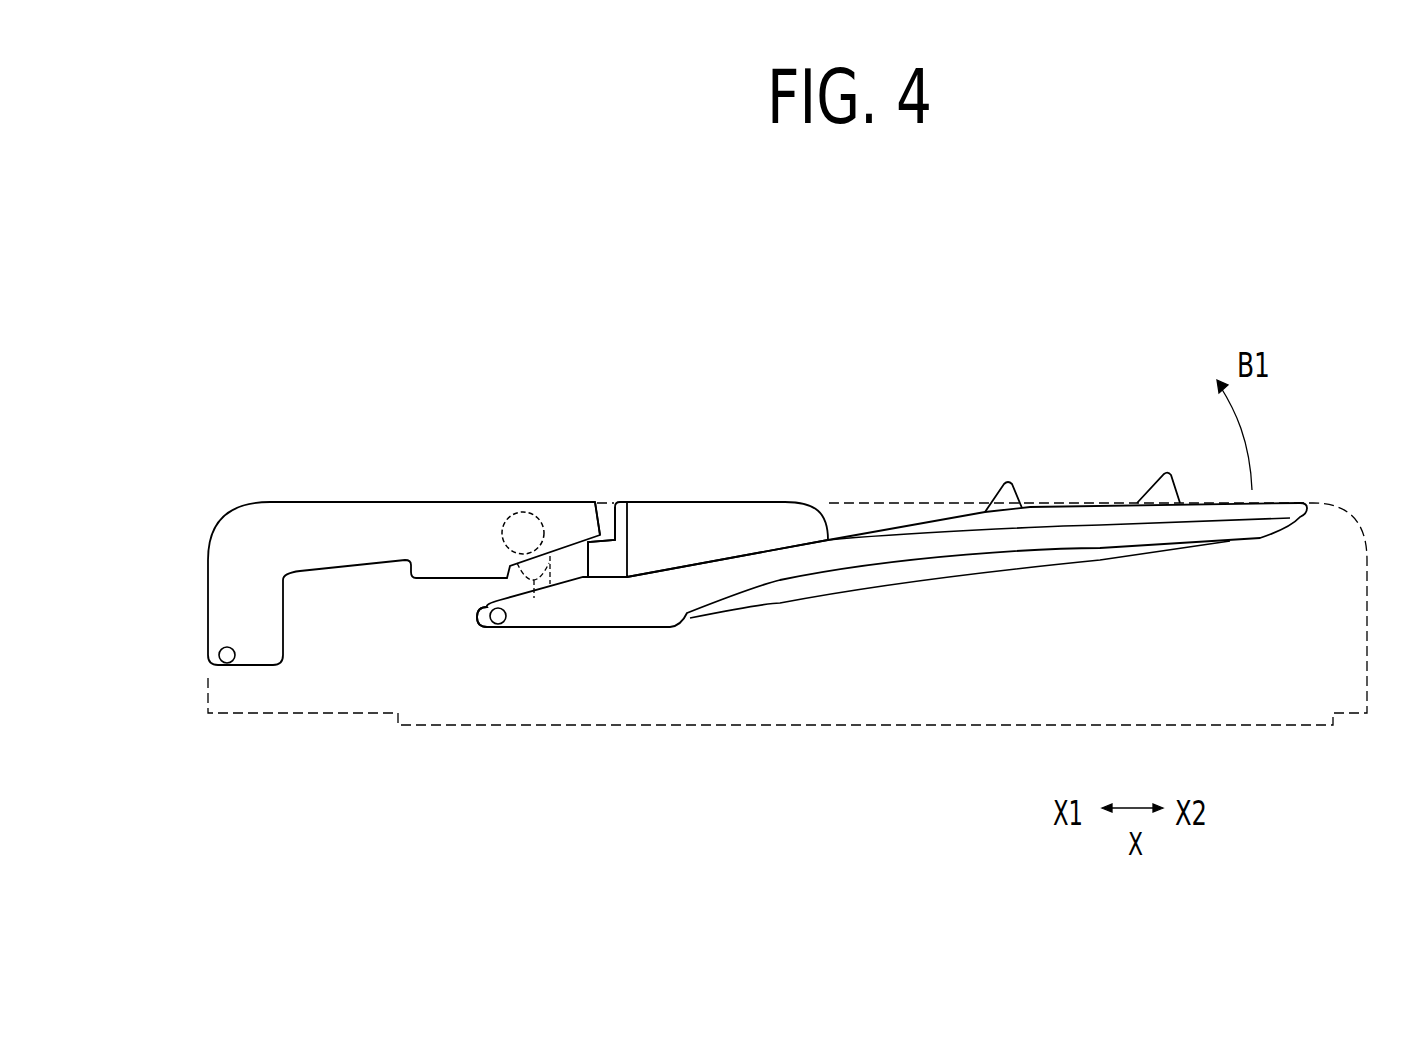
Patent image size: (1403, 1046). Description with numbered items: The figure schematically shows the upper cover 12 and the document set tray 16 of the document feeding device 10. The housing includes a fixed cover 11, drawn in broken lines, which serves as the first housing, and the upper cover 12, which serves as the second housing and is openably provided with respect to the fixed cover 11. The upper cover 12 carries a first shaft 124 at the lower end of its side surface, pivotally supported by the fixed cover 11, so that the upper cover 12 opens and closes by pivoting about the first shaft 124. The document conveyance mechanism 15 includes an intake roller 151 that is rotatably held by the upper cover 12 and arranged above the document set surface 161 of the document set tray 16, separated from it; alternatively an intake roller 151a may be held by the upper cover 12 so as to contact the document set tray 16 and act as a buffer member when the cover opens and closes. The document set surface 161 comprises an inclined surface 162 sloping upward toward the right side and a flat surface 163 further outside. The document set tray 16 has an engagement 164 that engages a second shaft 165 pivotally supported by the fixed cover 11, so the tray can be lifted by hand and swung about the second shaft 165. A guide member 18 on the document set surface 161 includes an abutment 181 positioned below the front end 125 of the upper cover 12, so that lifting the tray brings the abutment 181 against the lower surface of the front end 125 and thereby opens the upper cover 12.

The document feeding device 10 is at (256, 493).
The fixed cover 11 is at (263, 717).
The upper cover 12 is at (418, 502).
The document conveyance mechanism 15 is at (402, 661).
The document set tray 16 is at (1276, 504).
The guide member 18 is at (746, 515).
The first shaft 124 is at (218, 660).
The front end 125 is at (572, 500).
The intake roller 151 is at (521, 512).
The intake roller 151a is at (547, 608).
The document set surface 161 is at (1118, 392).
The inclined surface 162 is at (932, 510).
The flat surface 163 is at (1090, 503).
The engagement 164 is at (477, 627).
The second shaft 165 is at (498, 626).
The abutment 181 is at (615, 505).